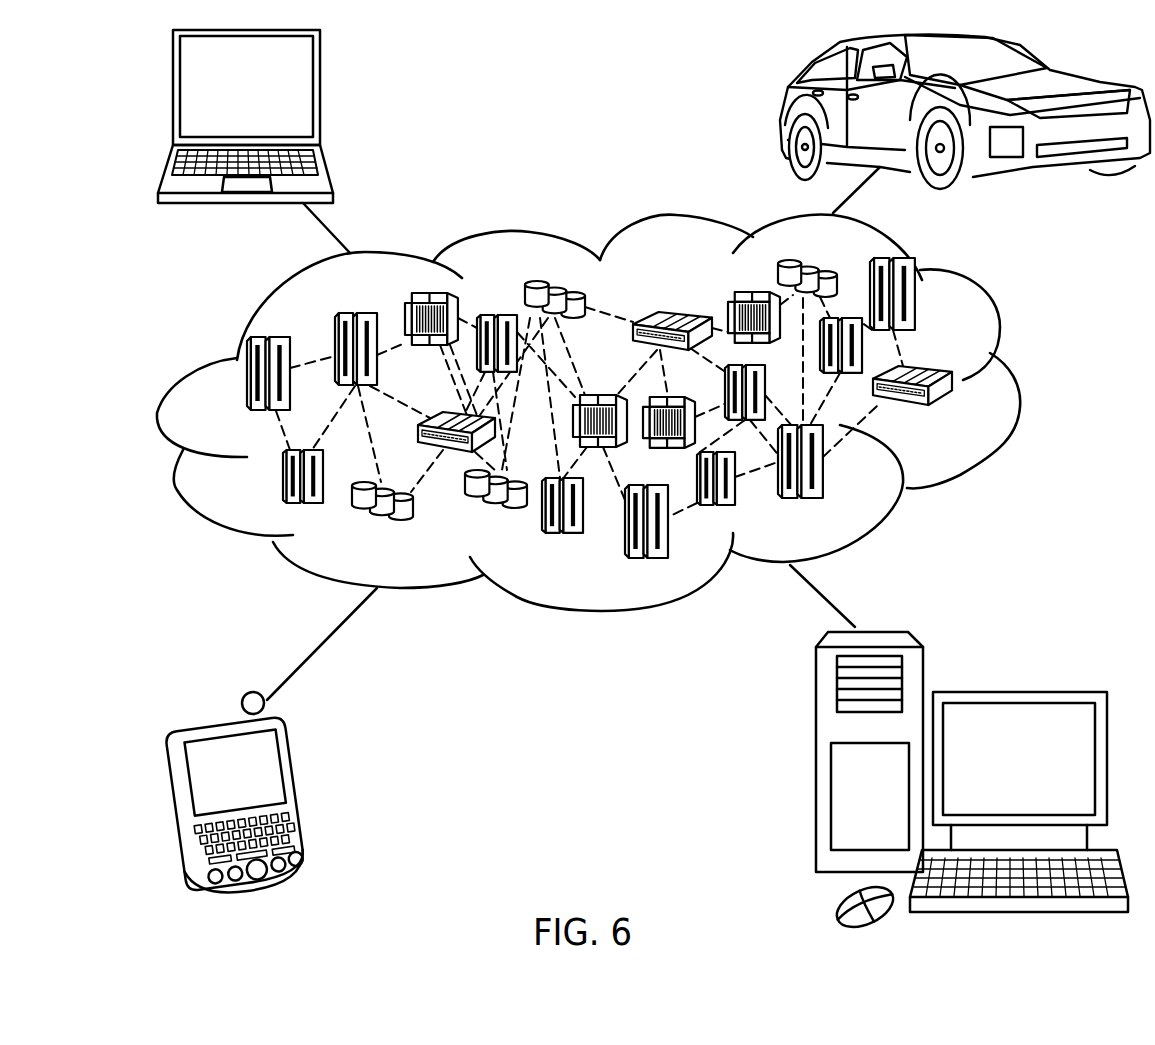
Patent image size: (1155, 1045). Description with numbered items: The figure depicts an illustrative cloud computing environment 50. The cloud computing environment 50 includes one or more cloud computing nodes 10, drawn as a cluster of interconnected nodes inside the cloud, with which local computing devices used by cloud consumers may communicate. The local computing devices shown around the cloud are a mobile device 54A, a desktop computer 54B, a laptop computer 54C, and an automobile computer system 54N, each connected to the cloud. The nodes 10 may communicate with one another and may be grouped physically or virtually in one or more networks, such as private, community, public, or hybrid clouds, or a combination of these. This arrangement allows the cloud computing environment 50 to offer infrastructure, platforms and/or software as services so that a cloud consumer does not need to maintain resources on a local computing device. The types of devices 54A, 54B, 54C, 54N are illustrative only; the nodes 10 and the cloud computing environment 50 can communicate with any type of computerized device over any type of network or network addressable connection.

The cloud computing environment 50 is at (1012, 385).
The cloud computing nodes 10 is at (953, 417).
The mobile device 54A is at (310, 790).
The desktop computer 54B is at (1017, 692).
The laptop computer 54C is at (320, 95).
The automobile computer system 54N is at (783, 112).